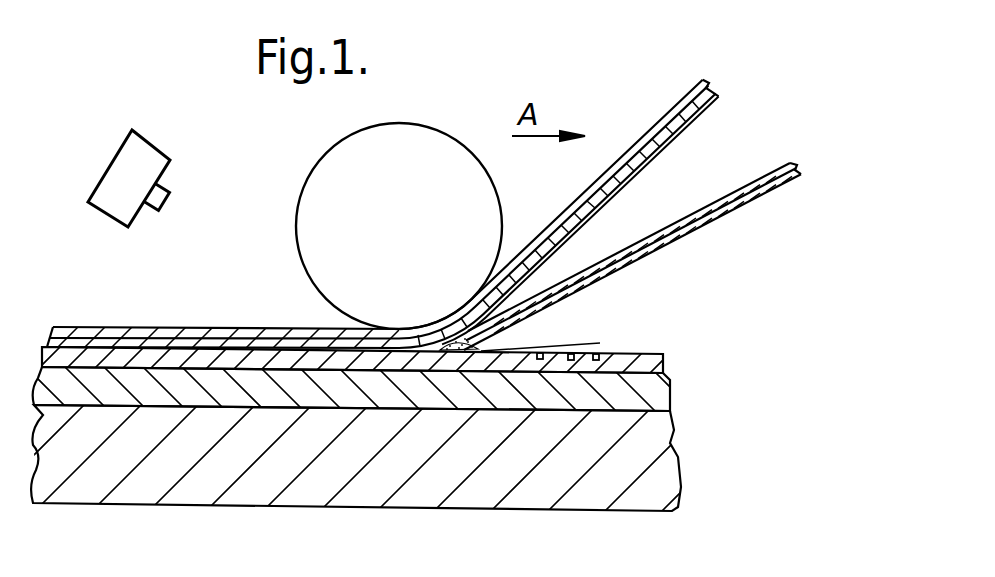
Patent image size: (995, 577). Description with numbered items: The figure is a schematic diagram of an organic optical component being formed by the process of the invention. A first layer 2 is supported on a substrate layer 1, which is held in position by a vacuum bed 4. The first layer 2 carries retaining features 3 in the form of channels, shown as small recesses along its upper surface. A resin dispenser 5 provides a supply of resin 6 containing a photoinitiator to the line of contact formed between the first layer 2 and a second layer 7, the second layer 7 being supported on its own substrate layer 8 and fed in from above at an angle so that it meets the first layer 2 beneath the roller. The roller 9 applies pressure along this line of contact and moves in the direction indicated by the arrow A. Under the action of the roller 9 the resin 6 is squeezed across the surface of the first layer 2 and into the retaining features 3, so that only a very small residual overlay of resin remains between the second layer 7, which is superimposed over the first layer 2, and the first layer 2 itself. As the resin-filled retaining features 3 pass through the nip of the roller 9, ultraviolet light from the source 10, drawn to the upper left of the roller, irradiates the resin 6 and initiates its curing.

The substrate layer 1 is at (652, 398).
The first layer 2 is at (648, 365).
The retaining features 3 is at (592, 352).
The vacuum bed 4 is at (660, 490).
The resin dispenser 5 is at (676, 242).
The resin 6 is at (478, 349).
The second layer 7 is at (705, 109).
The substrate layer 8 is at (687, 95).
The roller 9 is at (398, 123).
The source 10 is at (143, 138).